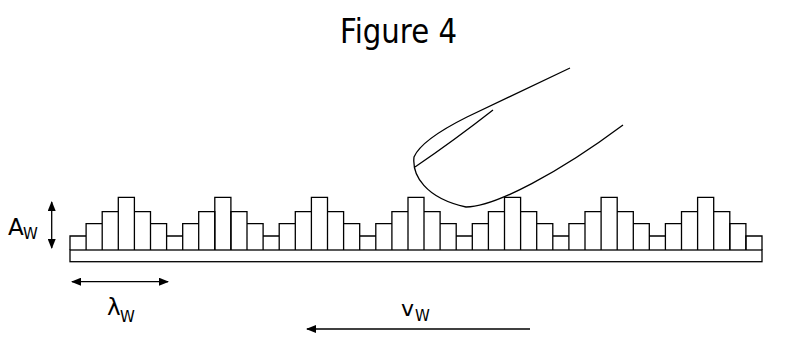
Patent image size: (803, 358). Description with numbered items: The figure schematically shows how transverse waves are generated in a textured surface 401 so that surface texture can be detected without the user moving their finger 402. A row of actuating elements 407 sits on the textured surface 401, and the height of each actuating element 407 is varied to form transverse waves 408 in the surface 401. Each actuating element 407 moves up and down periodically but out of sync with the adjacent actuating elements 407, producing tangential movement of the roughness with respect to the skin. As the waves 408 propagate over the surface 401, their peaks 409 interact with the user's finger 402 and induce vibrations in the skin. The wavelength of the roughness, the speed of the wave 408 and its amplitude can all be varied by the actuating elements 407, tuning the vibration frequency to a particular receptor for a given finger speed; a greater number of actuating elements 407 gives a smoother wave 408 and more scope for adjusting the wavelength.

The textured surface 401 is at (633, 257).
The user's finger 402 is at (550, 98).
The actuating element 407 is at (734, 232).
The transverse wave 408 is at (150, 135).
The peak of the wave 409 is at (222, 197).